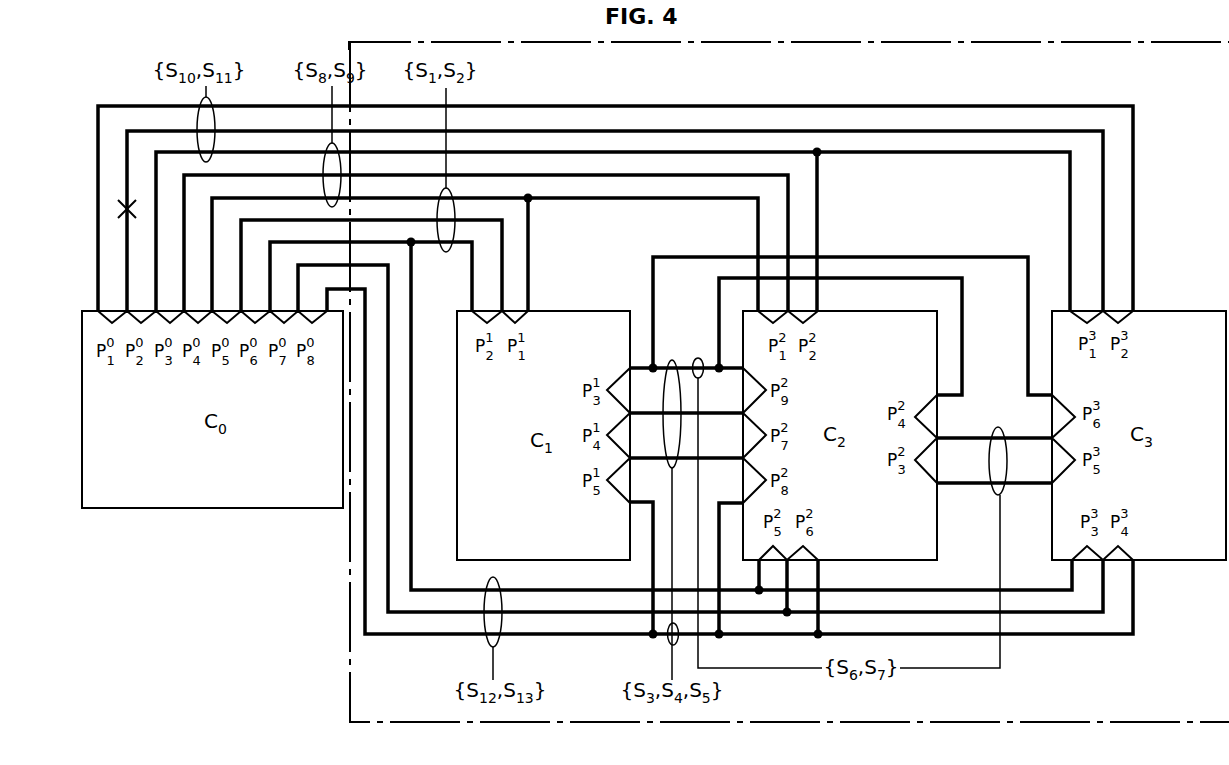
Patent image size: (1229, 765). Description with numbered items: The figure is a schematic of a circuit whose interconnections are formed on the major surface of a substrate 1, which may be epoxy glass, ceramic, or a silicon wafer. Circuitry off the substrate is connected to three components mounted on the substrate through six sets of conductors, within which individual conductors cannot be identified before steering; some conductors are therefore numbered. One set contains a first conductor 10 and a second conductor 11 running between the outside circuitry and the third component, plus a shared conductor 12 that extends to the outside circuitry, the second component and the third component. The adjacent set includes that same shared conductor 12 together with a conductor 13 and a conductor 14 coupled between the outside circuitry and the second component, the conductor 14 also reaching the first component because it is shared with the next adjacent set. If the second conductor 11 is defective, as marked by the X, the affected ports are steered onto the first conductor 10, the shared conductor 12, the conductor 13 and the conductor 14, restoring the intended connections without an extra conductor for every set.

The substrate 1 is at (382, 47).
The first conductor 10 is at (667, 107).
The second conductor 11 is at (667, 131).
The shared conductor 12 is at (667, 152).
The conductor 13 is at (667, 175).
The conductor 14 is at (667, 198).